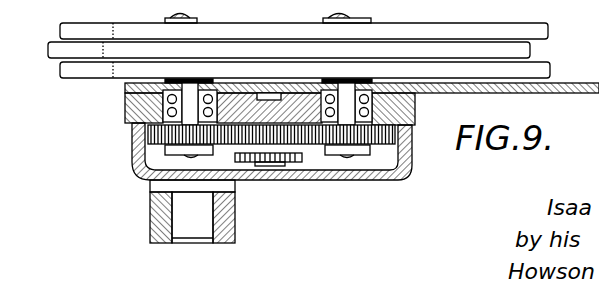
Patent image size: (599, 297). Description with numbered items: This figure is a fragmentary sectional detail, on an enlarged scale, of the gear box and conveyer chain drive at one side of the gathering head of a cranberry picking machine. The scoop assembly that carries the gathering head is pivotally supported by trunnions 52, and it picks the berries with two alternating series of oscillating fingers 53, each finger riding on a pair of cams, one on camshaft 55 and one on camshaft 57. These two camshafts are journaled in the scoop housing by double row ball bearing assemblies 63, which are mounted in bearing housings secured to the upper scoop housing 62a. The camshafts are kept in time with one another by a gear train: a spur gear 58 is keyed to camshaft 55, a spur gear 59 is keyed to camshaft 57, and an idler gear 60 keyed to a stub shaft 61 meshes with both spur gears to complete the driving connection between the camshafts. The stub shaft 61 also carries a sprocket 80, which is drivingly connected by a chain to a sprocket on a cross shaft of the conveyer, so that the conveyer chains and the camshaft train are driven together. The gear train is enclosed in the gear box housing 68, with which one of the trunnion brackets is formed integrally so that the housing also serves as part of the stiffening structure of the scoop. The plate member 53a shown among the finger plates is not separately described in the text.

The trunnion 52 is at (200, 230).
The oscillating fingers 53 is at (302, 40).
The middle plate 53a is at (48, 52).
The camshaft 55 is at (352, 17).
The camshaft 57 is at (193, 0).
The spur gear 58 is at (326, 148).
The spur gear 59 is at (148, 143).
The idler gear 60 is at (303, 157).
The stub shaft 61 is at (270, 91).
The upper scoop housing 62a is at (124, 86).
The double row ball bearing assemblies 63 is at (173, 108).
The gear box housing 68 is at (368, 180).
The sprocket 80 is at (278, 163).